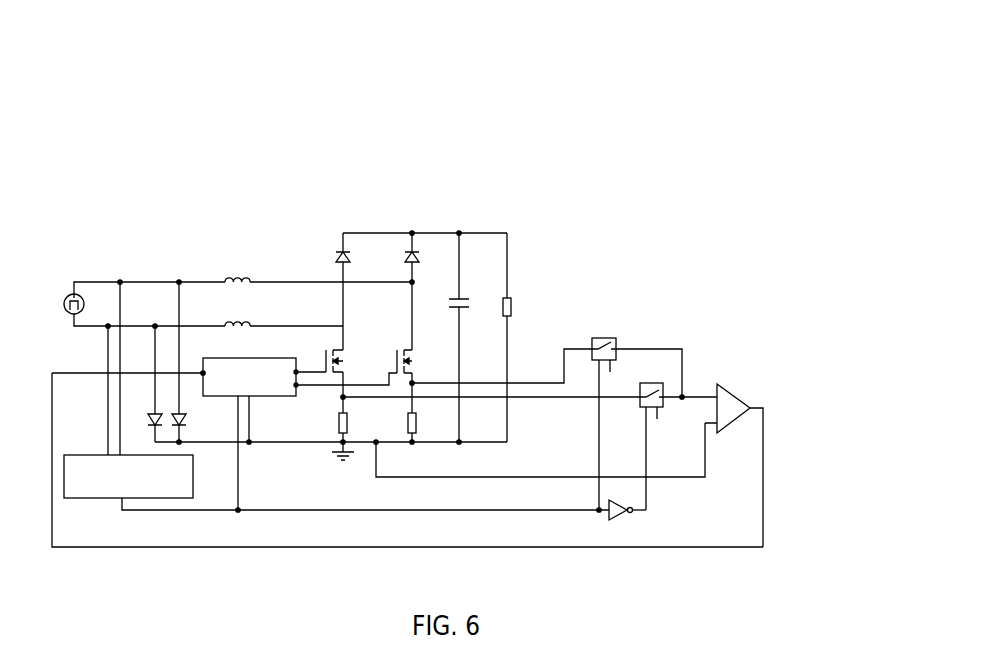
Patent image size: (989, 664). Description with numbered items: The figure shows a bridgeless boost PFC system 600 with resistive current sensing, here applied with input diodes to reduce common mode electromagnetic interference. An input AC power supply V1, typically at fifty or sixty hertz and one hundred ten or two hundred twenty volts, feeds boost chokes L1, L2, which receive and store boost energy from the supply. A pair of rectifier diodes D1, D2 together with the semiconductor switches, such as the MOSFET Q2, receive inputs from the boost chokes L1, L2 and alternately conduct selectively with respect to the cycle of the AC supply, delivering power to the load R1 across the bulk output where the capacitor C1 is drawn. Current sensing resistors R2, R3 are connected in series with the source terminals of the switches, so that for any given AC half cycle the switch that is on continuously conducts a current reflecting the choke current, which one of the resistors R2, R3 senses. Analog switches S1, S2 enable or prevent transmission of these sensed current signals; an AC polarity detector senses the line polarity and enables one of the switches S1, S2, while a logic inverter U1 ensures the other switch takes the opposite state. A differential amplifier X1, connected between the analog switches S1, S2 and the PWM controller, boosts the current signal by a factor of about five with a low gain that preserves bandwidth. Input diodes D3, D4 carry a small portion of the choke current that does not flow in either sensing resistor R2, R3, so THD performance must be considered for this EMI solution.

The bridgeless boost PFC system with input diodes 600 is at (721, 116).
The input AC power supply V1 is at (115, 304).
The boost choke L1 is at (318, 291).
The boost choke L2 is at (284, 337).
The rectifier diode D1 is at (361, 291).
The rectifier diode D2 is at (429, 291).
The input diode D3 is at (145, 411).
The input diode D4 is at (195, 422).
The semiconductor switch Q2 is at (352, 375).
The load R1 is at (530, 337).
The current sensing resistor R2 is at (330, 426).
The current sensing resistor R3 is at (401, 427).
The bulk capacitor C1 is at (475, 337).
The analog switch S1 is at (603, 414).
The analog switch S2 is at (649, 434).
The differential amplifier X1 is at (609, 429).
The logic inverter U1 is at (633, 510).